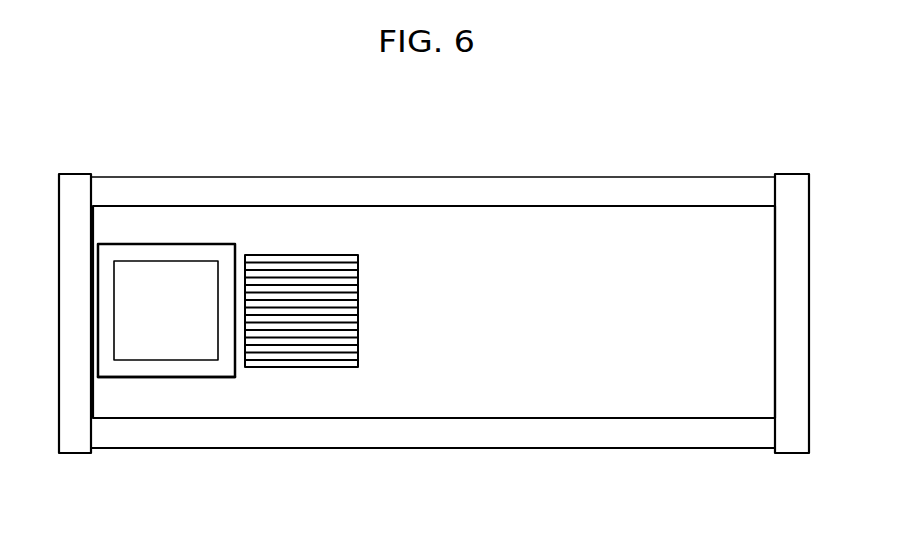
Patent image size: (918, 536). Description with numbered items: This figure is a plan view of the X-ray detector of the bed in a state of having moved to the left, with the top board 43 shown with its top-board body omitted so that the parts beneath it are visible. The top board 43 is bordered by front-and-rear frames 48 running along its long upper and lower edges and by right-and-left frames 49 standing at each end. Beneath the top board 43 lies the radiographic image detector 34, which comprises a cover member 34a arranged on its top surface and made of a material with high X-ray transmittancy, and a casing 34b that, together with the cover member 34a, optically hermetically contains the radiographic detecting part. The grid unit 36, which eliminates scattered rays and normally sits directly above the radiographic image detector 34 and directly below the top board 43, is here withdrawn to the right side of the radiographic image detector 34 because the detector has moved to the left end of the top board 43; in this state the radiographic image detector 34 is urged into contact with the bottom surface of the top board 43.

The radiographic image detector 34 is at (212, 244).
The cover member 34a is at (174, 277).
The casing 34b is at (212, 378).
The grid unit 36 is at (341, 270).
The top board 43 is at (145, 177).
The front-and-rear frames 48 is at (306, 186).
The right-and-left frames 49 is at (75, 185).